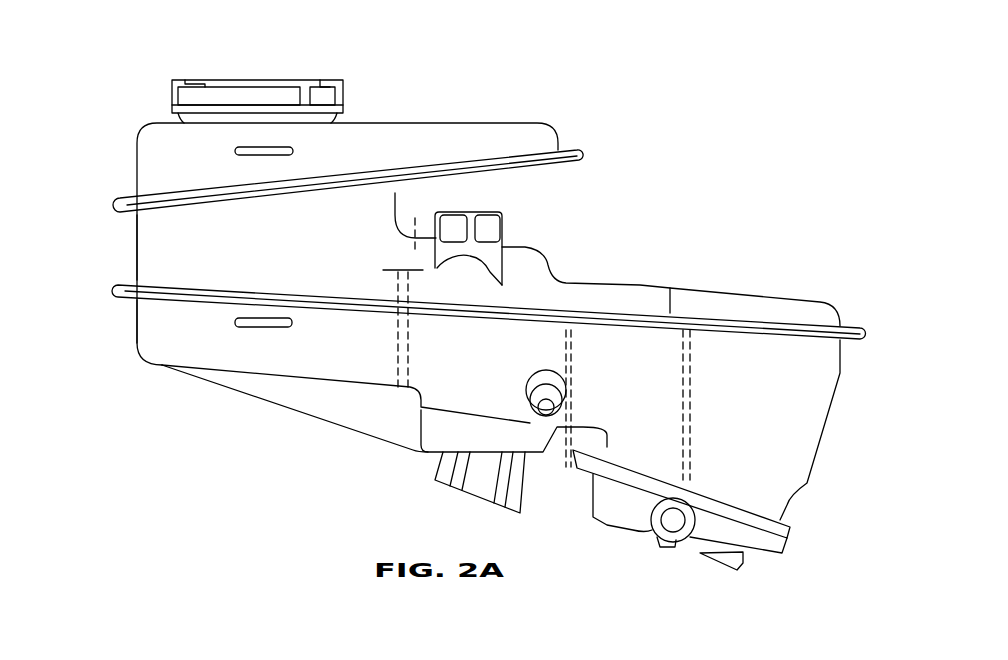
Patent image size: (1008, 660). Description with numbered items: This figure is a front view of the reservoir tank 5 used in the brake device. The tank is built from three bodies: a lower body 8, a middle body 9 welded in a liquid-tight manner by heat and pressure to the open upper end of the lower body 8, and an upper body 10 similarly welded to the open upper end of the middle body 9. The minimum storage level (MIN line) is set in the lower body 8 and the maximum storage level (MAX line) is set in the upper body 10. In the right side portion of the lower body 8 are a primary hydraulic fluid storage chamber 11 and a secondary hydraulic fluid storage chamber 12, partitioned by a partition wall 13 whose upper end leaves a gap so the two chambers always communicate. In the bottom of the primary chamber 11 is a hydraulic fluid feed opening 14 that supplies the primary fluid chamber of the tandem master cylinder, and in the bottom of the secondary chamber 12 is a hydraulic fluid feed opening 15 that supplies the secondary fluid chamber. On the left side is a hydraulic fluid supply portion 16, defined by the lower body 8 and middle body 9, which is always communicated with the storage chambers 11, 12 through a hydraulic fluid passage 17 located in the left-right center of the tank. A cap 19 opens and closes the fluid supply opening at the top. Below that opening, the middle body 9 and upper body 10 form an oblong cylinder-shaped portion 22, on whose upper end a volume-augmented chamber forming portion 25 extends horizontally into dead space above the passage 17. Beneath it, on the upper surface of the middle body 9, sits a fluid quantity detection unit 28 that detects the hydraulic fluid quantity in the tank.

The reservoir tank 5 is at (75, 160).
The lower body 8 is at (148, 326).
The middle body 9 is at (148, 247).
The upper body 10 is at (145, 160).
The primary hydraulic fluid storage chamber 11 is at (805, 443).
The secondary hydraulic fluid storage chamber 12 is at (600, 443).
The partition wall 13 is at (697, 375).
The hydraulic fluid feed opening 14 is at (727, 557).
The hydraulic fluid feed opening 15 is at (612, 512).
The hydraulic fluid supply portion 16 is at (293, 352).
The hydraulic fluid passage 17 is at (414, 290).
The cap 19 is at (318, 80).
The oblong cylinder-shaped portion 22 is at (372, 205).
The volume-augmented chamber forming portion 25 is at (490, 133).
The fluid quantity detection unit 28 is at (497, 225).